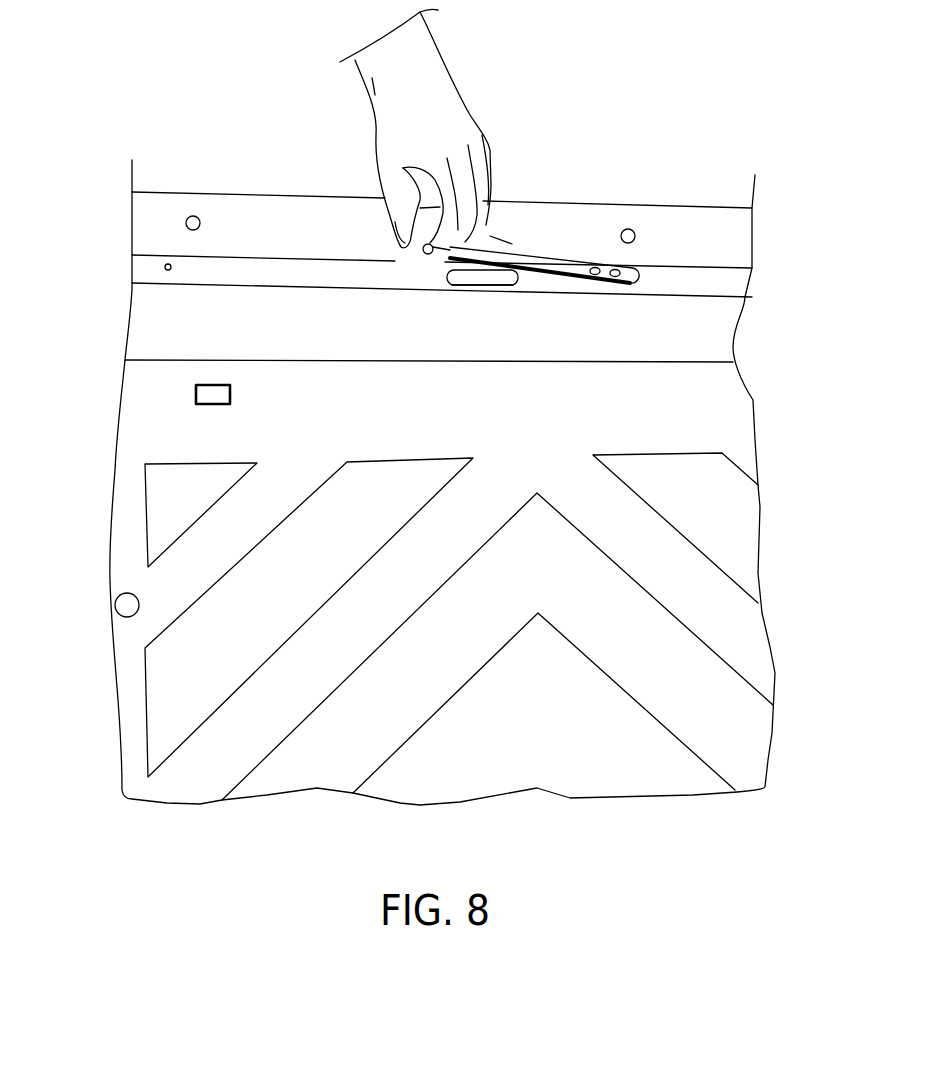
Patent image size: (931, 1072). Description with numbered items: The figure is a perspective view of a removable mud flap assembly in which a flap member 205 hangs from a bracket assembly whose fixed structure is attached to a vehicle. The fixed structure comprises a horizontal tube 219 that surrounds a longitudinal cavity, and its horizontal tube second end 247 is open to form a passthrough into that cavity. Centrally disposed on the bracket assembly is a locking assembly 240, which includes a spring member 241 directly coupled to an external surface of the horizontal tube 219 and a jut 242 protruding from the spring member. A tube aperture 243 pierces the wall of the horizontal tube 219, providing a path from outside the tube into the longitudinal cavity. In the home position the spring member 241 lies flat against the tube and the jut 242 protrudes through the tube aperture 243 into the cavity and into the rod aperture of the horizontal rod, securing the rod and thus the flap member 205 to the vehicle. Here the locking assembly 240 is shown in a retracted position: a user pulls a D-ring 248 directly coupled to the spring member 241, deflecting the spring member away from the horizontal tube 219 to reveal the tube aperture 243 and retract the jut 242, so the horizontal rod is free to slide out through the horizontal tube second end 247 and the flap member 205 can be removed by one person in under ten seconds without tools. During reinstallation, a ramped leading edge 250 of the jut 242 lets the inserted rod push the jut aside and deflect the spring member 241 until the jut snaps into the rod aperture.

The flap member 205 is at (127, 452).
The horizontal tube 219 is at (168, 273).
The locking assembly 240 is at (507, 255).
The spring member 241 is at (502, 240).
The jut 242 is at (487, 278).
The tube aperture 243 is at (462, 287).
The horizontal tube second end 247 is at (130, 256).
The D-ring 248 is at (430, 247).
The ramped leading edge 250 is at (517, 240).